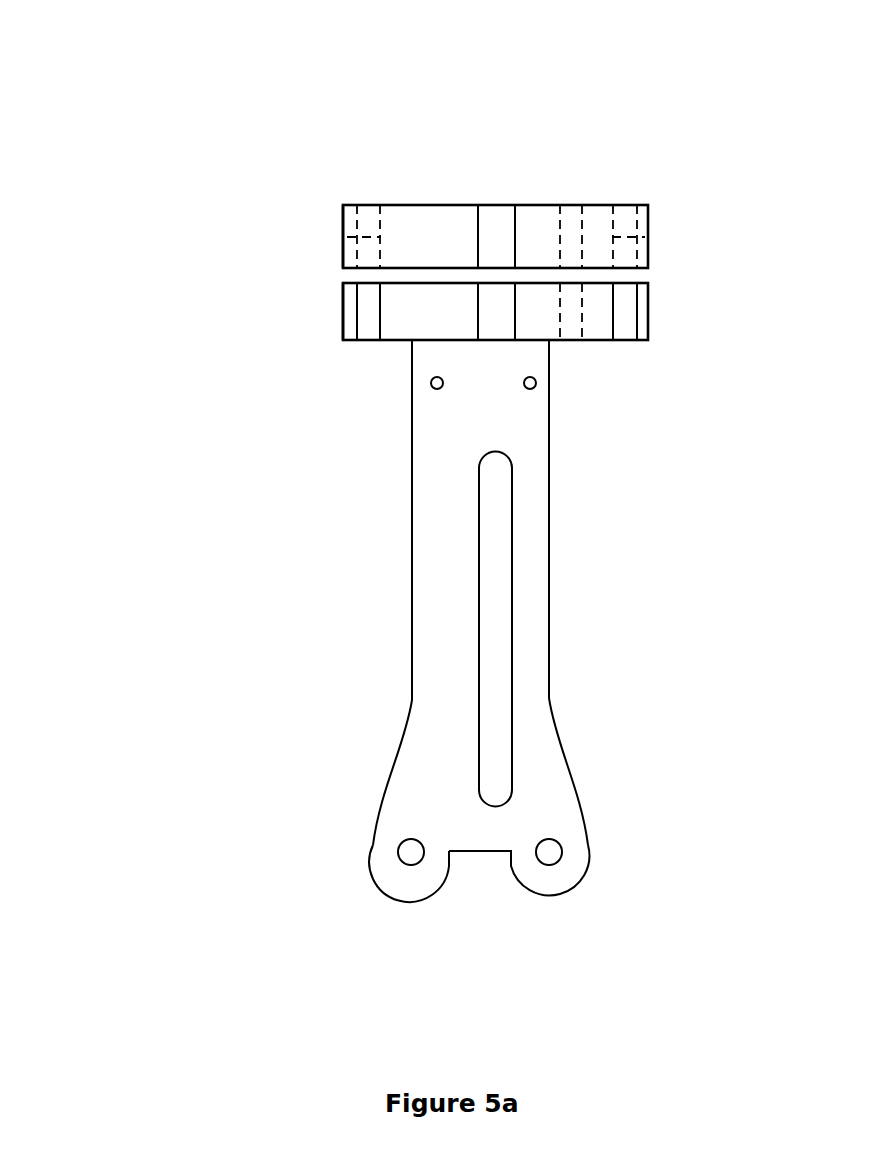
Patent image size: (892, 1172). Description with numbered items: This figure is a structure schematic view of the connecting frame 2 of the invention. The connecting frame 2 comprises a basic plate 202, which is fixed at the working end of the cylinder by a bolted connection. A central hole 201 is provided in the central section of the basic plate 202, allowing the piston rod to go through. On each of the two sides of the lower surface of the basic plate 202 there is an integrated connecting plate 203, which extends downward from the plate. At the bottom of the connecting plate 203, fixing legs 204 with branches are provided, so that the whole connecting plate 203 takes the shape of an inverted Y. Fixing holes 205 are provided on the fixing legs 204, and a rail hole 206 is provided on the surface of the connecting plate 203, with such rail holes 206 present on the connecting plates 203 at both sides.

The connecting frame 2 is at (322, 382).
The central hole 201 is at (500, 222).
The basic plate 202 is at (408, 252).
The connecting plate 203 is at (428, 615).
The fixing legs 204 is at (541, 882).
The fixing holes 205 is at (547, 851).
The rail holes 206 is at (495, 590).